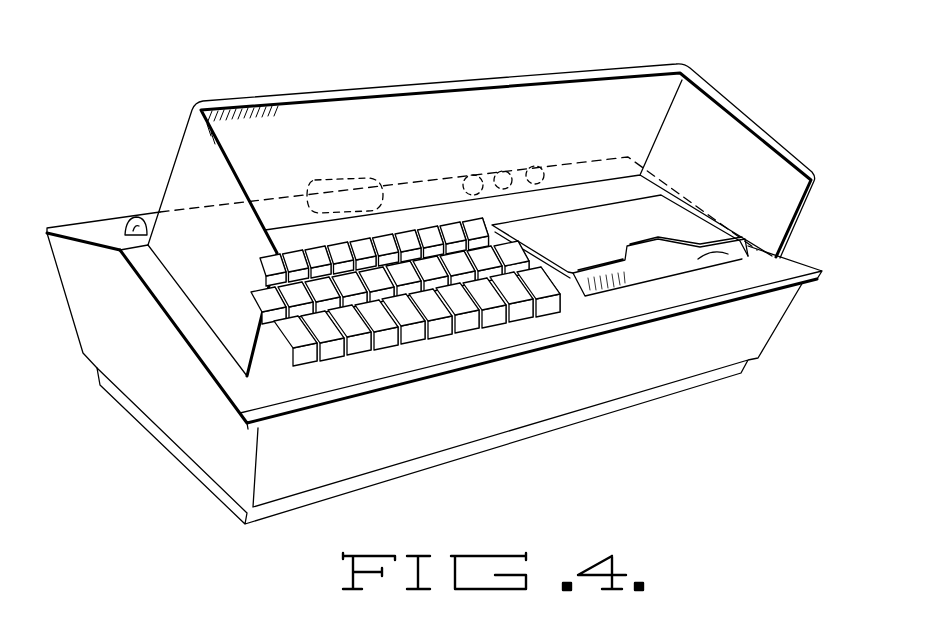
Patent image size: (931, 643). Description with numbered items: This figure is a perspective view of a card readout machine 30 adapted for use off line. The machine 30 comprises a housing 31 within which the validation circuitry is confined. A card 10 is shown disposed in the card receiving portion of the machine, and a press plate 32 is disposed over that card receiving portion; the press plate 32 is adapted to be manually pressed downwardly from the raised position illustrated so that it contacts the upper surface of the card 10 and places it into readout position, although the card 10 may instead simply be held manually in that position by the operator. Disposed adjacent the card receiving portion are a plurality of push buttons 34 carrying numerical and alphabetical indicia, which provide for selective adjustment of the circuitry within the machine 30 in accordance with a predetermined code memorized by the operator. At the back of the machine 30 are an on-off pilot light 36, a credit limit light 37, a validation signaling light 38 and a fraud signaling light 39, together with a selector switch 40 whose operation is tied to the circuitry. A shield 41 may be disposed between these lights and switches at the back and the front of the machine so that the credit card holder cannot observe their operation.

The card 10 is at (755, 256).
The readout machine 30 is at (112, 190).
The housing 31 is at (231, 480).
The press plate 32 is at (600, 256).
The push buttons 34 is at (390, 338).
The on-off pilot light 36 is at (131, 214).
The credit limit light 37 is at (473, 174).
The validation signaling light 38 is at (506, 170).
The fraud signaling light 39 is at (539, 167).
The selector switch 40 is at (342, 178).
The shield 41 is at (620, 86).